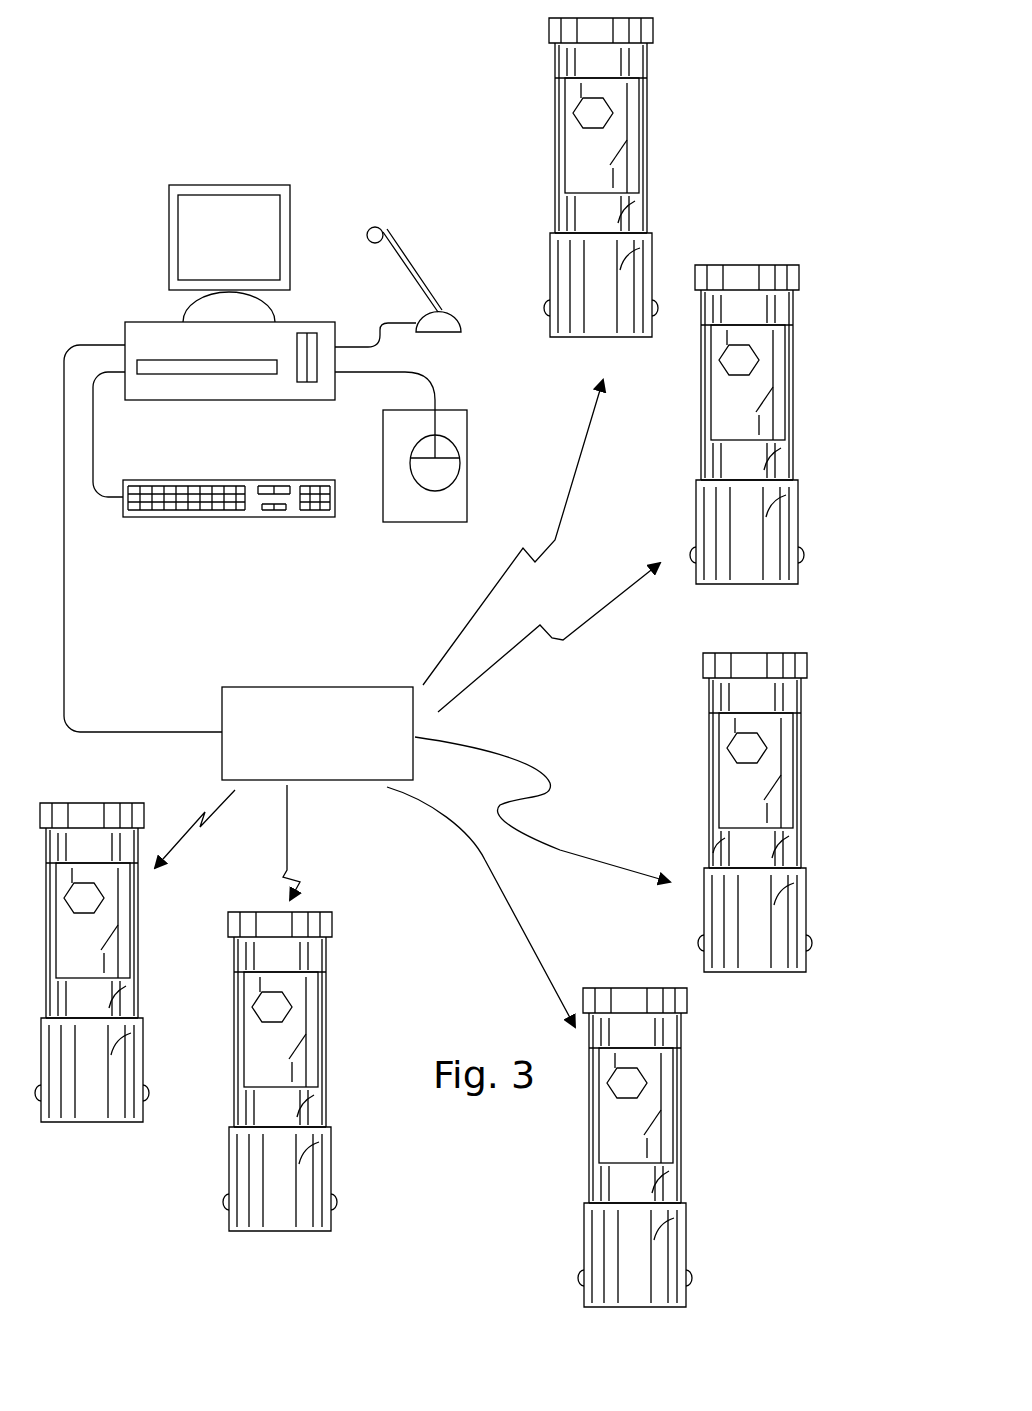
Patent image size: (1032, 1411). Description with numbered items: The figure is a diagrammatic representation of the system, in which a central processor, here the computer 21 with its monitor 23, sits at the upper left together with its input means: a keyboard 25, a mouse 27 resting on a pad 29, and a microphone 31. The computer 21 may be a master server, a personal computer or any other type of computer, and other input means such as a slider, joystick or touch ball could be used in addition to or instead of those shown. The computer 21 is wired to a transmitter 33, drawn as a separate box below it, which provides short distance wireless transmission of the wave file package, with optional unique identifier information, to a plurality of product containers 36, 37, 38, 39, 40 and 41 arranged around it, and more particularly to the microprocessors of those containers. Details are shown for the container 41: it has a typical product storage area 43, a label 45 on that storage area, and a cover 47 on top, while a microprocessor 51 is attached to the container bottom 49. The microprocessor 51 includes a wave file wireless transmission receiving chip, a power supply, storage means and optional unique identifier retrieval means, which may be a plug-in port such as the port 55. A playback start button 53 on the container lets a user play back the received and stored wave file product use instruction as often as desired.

The computer 21 is at (290, 392).
The monitor 23 is at (290, 215).
The keyboard 25 is at (262, 514).
The mouse 27 is at (458, 432).
The pad 29 is at (450, 478).
The microphone 31 is at (430, 278).
The transmitter 33 is at (333, 768).
The product container 36 is at (147, 945).
The product container 37 is at (334, 995).
The product container 38 is at (702, 1047).
The product container 39 is at (677, 122).
The product container 40 is at (818, 400).
The product container 41 is at (773, 787).
The product storage area 43 is at (826, 839).
The label 45 is at (797, 770).
The cover 47 is at (780, 640).
The container bottom 49 is at (685, 840).
The microprocessor 51 is at (829, 885).
The playback start button 53 is at (852, 935).
The port 55 is at (667, 933).